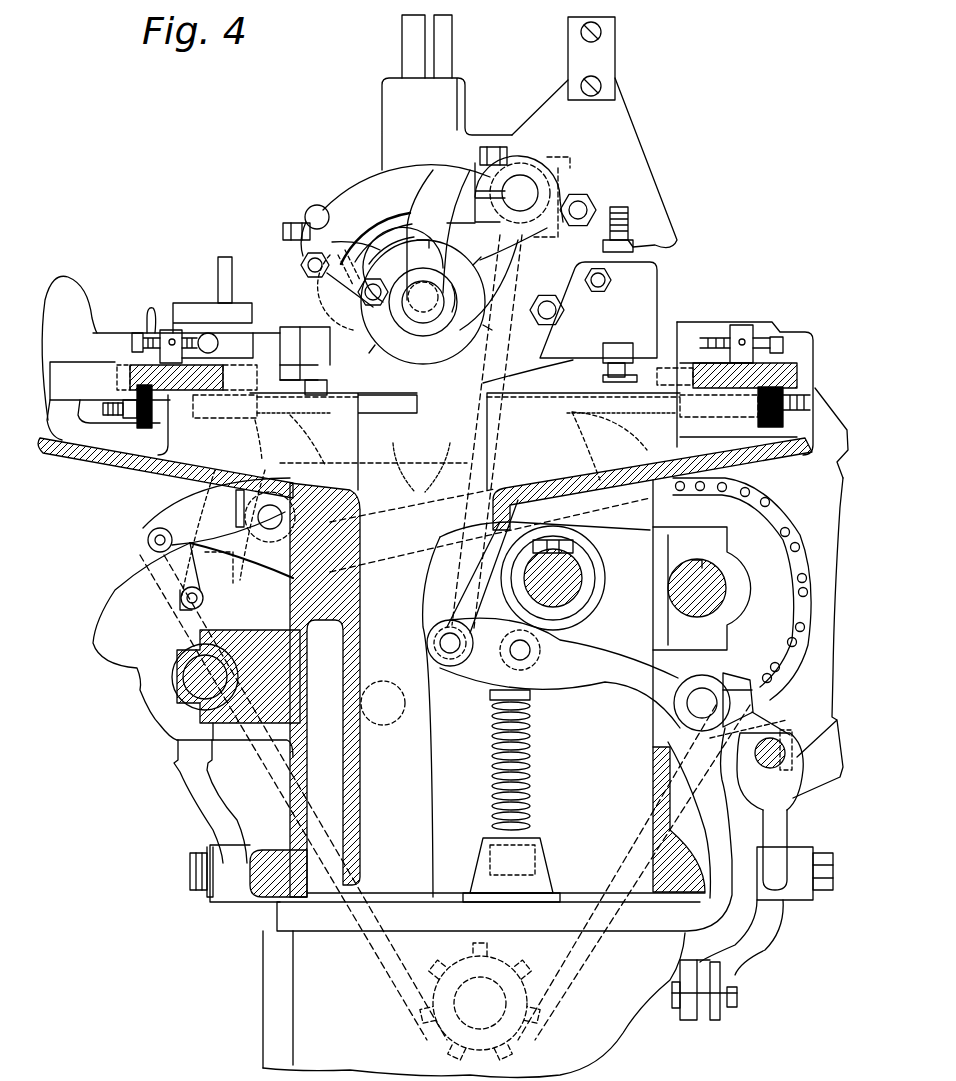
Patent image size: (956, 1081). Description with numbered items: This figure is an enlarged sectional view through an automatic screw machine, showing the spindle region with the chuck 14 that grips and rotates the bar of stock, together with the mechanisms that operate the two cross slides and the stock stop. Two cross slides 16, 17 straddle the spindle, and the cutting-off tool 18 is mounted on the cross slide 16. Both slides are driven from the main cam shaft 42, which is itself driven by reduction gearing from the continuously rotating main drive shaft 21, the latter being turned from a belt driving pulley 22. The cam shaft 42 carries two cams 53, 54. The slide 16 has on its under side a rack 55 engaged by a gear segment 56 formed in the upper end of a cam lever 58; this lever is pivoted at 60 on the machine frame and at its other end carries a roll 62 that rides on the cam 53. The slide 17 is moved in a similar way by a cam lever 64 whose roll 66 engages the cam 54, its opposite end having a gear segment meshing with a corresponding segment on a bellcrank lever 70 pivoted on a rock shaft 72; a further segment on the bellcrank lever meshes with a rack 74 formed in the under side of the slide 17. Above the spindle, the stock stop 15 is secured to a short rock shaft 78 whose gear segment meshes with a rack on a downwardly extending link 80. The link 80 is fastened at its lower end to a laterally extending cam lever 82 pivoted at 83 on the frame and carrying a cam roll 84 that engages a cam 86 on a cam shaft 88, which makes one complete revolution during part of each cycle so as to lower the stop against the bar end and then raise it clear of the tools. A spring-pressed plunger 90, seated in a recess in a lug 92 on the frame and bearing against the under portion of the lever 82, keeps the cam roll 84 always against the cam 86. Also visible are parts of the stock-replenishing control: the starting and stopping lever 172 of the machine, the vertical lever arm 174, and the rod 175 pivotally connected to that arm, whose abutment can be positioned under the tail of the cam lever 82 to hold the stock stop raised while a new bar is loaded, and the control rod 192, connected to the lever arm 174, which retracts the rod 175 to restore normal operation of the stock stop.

The chuck 14 is at (425, 330).
The stock stop 15 is at (445, 195).
The cross slide 16 is at (95, 357).
The cross slide 17 is at (645, 380).
The cutting-off tool 18 is at (377, 258).
The main drive shaft 21 is at (705, 588).
The belt driving pulley 22 is at (830, 410).
The main cam shaft 42 is at (190, 678).
The cam 53 is at (100, 635).
The cam 54 is at (222, 575).
The rack 55 is at (352, 390).
The gear segment 56 is at (254, 445).
The cam lever 58 is at (183, 507).
The pivot 60 is at (305, 484).
The roll 62 is at (147, 545).
The cam lever 64 is at (378, 470).
The roll 66 is at (180, 598).
The bellcrank lever 70 is at (464, 470).
The rock shaft 72 is at (574, 443).
The rack 74 is at (610, 394).
The rock shaft 78 is at (522, 190).
The link 80 is at (467, 598).
The cam lever 82 is at (613, 682).
The pivot 83 is at (698, 695).
The cam roll 84 is at (545, 645).
The cam 86 is at (597, 580).
The cam shaft 88 is at (585, 565).
The spring-pressed plunger 90 is at (530, 766).
The lug 92 is at (540, 870).
The starting and stopping lever 172 is at (62, 295).
The vertical lever arm 174 is at (185, 785).
The rod 175 is at (780, 738).
The control rod 192 is at (720, 975).